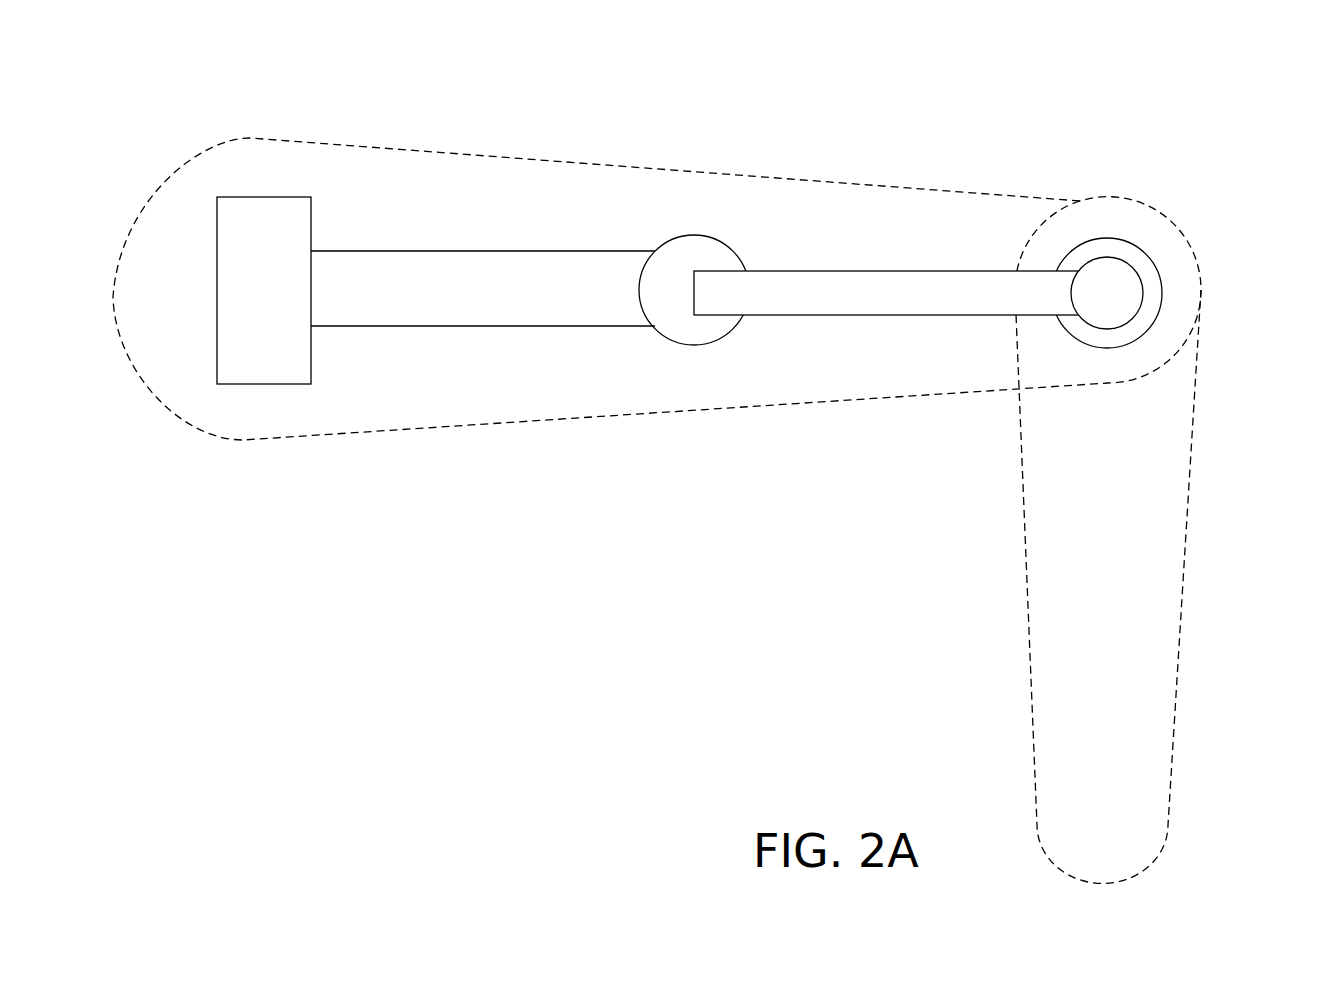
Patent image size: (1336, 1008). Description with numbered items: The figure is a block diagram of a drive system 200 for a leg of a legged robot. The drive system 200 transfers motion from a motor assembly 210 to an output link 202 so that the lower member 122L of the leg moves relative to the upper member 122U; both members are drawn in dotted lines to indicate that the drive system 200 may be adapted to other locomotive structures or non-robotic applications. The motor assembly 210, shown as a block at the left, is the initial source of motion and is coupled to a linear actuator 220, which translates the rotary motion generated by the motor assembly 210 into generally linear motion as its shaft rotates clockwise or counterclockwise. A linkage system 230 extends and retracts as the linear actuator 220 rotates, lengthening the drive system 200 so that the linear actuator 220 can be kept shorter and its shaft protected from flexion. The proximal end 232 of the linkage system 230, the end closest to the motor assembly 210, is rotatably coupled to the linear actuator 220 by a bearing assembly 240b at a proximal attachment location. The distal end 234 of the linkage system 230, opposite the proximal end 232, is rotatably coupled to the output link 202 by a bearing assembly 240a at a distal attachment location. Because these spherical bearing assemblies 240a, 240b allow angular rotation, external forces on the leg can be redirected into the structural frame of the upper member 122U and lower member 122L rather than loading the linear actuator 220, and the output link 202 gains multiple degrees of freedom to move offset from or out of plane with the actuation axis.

The drive system 200 is at (1037, 102).
The upper member 122U is at (572, 162).
The lower member 122L is at (1187, 512).
The motor assembly 210 is at (217, 304).
The linear actuator 220 is at (468, 251).
The bearing assembly 240b is at (706, 208).
The proximal end 232 is at (748, 245).
The linkage system 230 is at (847, 271).
The distal end 234 is at (1054, 256).
The bearing assembly 240a is at (1148, 251).
The output link 202 is at (1142, 296).